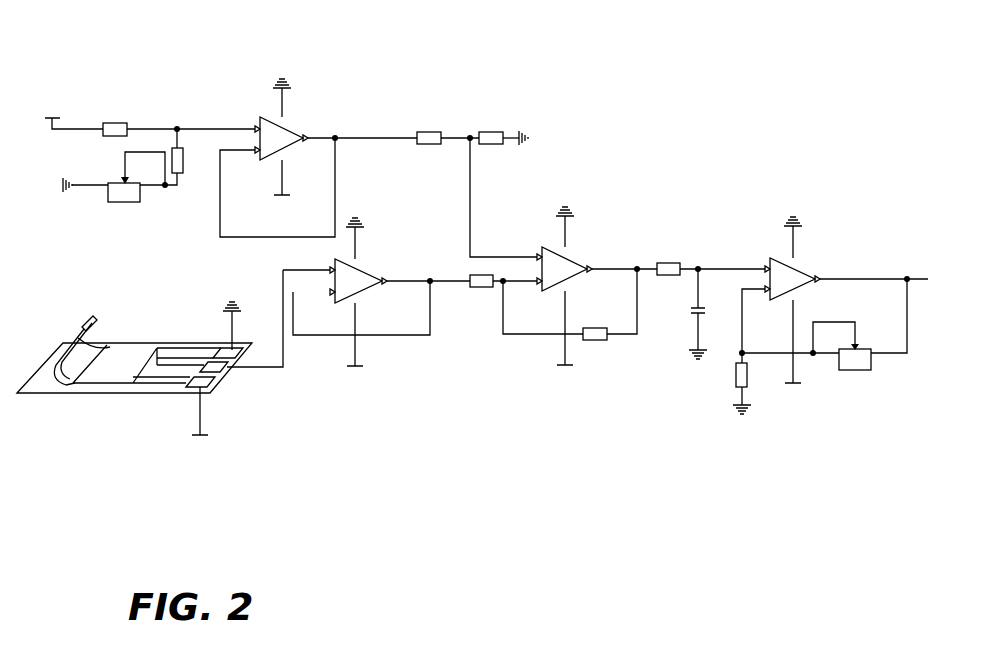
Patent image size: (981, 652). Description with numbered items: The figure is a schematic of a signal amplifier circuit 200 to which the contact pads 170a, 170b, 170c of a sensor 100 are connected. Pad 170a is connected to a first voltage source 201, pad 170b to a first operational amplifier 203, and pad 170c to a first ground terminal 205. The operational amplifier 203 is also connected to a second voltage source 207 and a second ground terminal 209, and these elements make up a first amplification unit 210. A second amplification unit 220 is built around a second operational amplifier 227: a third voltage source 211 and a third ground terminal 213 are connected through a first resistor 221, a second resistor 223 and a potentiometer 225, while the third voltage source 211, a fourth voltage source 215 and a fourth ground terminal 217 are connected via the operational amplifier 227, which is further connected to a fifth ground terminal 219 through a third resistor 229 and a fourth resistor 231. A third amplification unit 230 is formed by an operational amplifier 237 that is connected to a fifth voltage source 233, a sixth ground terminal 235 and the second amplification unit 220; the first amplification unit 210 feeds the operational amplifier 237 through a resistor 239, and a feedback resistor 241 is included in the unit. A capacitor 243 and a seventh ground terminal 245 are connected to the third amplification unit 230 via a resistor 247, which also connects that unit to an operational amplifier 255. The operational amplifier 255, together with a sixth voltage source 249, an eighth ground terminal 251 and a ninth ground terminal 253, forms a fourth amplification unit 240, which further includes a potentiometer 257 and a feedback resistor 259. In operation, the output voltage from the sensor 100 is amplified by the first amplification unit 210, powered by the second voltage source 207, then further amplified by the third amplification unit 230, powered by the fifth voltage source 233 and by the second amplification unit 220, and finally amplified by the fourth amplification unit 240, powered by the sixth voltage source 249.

The sensor 100 is at (135, 333).
The contact pad 170a is at (206, 387).
The contact pad 170b is at (220, 370).
The contact pad 170c is at (231, 349).
The signal amplifier circuit 200 is at (499, 39).
The first voltage source 201 is at (202, 425).
The first operational amplifier 203 is at (348, 313).
The first ground terminal 205 is at (231, 317).
The second voltage source 207 is at (354, 346).
The second ground terminal 209 is at (354, 229).
The first amplification unit 210 is at (384, 344).
The third voltage source 211 is at (72, 113).
The third ground terminal 213 is at (74, 187).
The fourth voltage source 215 is at (281, 189).
The fourth ground terminal 217 is at (281, 89).
The fifth ground terminal 219 is at (539, 139).
The second amplification unit 220 is at (345, 84).
The first resistor 221 is at (179, 121).
The second resistor 223 is at (185, 157).
The potentiometer 225 is at (138, 187).
The second operational amplifier 227 is at (318, 177).
The third resistor 229 is at (448, 130).
The third amplification unit 230 is at (600, 354).
The fourth resistor 231 is at (499, 130).
The fifth voltage source 233 is at (564, 340).
The sixth ground terminal 235 is at (564, 218).
The operational amplifier 237 is at (563, 226).
The resistor 239 is at (503, 273).
The fourth amplification unit 240 is at (822, 417).
The feedback resistor 241 is at (570, 304).
The capacitor 243 is at (709, 309).
The seventh ground terminal 245 is at (697, 368).
The resistor 247 is at (711, 261).
The sixth voltage source 249 is at (792, 354).
The eighth ground terminal 251 is at (792, 229).
The ninth ground terminal 253 is at (742, 422).
The operational amplifier 255 is at (853, 279).
The potentiometer 257 is at (823, 335).
The feedback resistor 259 is at (754, 379).